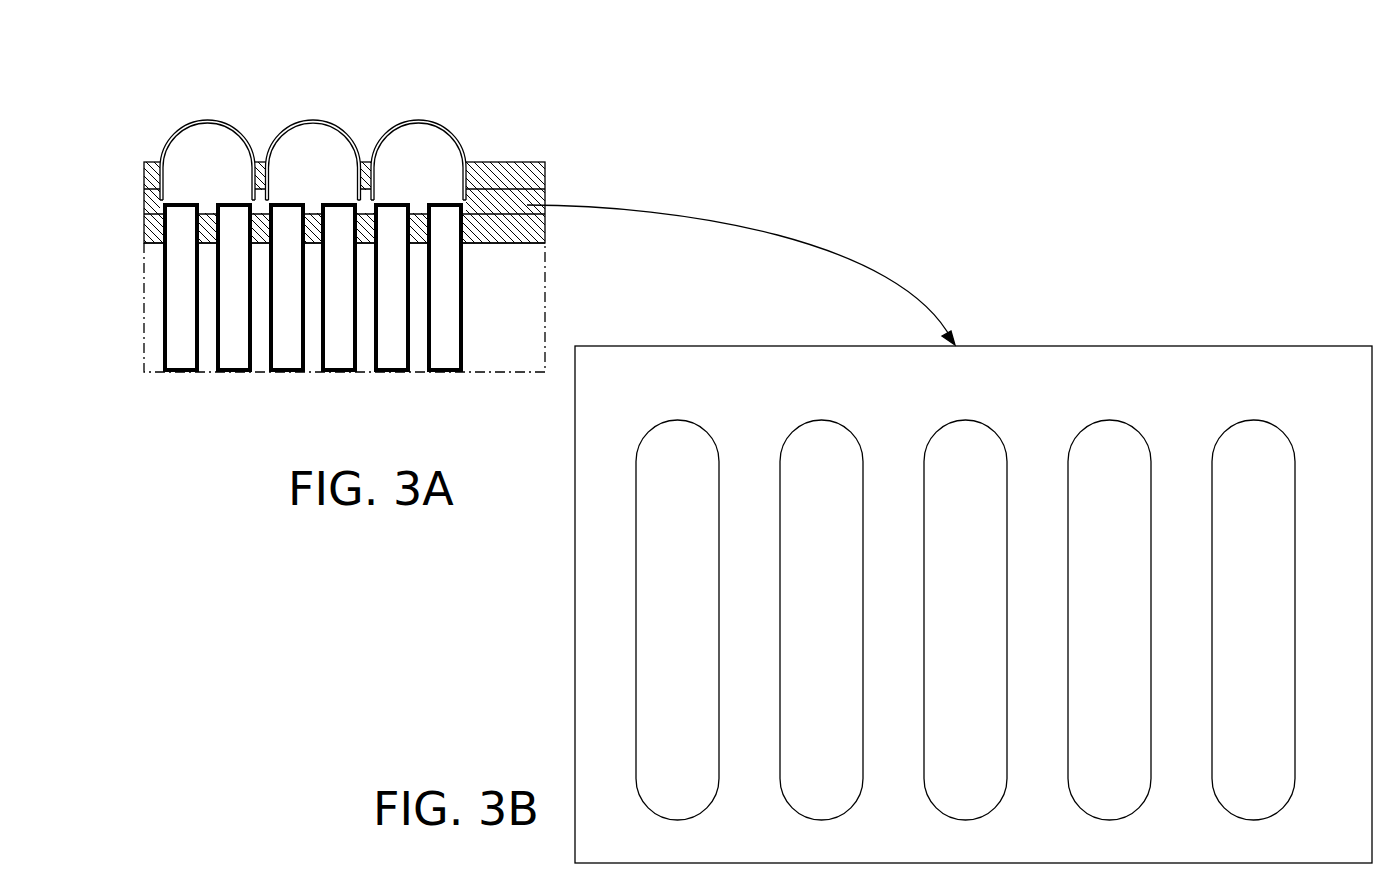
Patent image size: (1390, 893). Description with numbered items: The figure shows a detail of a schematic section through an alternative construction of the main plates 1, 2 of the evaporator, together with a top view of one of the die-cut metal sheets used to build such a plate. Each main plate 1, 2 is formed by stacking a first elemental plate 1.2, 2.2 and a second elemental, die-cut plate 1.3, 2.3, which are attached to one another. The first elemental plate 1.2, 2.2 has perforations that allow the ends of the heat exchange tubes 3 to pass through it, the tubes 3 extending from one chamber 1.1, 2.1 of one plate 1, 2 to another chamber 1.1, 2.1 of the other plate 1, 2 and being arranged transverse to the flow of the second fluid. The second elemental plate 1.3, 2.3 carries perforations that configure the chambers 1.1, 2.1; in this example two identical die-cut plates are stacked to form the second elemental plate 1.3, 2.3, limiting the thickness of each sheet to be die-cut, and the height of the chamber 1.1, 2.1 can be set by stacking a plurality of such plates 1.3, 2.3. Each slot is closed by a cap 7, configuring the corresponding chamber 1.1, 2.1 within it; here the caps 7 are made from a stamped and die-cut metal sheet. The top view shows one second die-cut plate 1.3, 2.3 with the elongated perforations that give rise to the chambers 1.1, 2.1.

In FIG. 3A, the main plate 1 is at (504, 215).
In FIG. 3A, the main plate 2 is at (504, 215).
In FIG. 3A, the chamber 1.1 is at (365, 116).
In FIG. 3B, the chamber 1.1 is at (982, 550).
In FIG. 3A, the chamber 2.1 is at (303, 157).
In FIG. 3B, the chamber 2.1 is at (1113, 463).
In FIG. 3A, the first elemental plate 1.2 is at (441, 249).
In FIG. 3A, the first elemental plate 2.2 is at (545, 230).
In FIG. 3A, the second elemental die-cut plate 1.3 is at (538, 153).
In FIG. 3B, the second elemental die-cut plate 1.3 is at (973, 535).
In FIG. 3A, the second elemental die-cut plate 2.3 is at (545, 197).
In FIG. 3B, the second elemental die-cut plate 2.3 is at (1062, 345).
In FIG. 3A, the heat exchange tube 3 is at (268, 318).
In FIG. 3A, the cap 7 is at (167, 140).